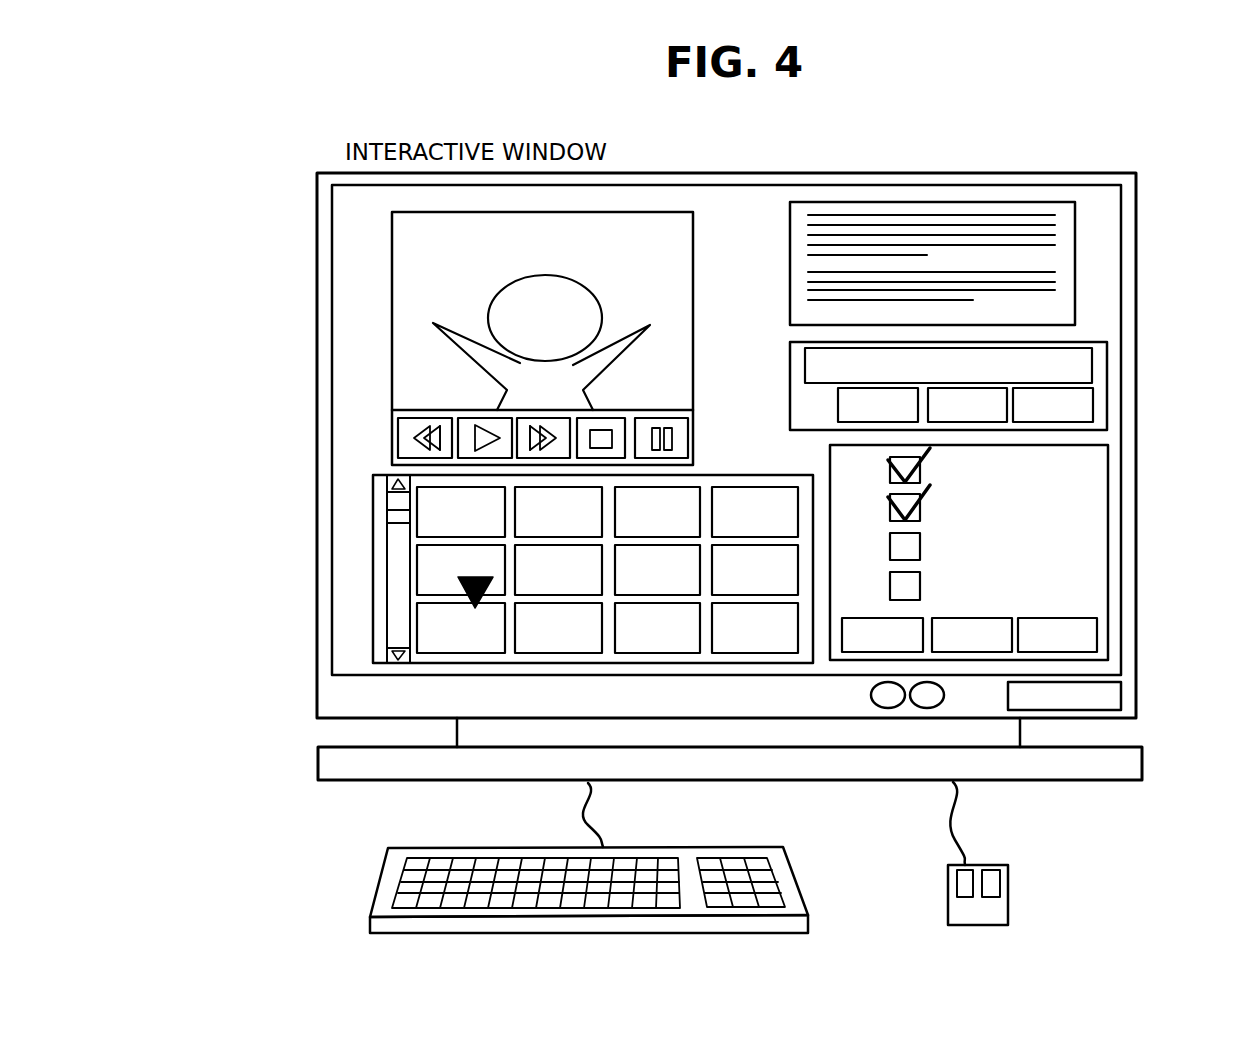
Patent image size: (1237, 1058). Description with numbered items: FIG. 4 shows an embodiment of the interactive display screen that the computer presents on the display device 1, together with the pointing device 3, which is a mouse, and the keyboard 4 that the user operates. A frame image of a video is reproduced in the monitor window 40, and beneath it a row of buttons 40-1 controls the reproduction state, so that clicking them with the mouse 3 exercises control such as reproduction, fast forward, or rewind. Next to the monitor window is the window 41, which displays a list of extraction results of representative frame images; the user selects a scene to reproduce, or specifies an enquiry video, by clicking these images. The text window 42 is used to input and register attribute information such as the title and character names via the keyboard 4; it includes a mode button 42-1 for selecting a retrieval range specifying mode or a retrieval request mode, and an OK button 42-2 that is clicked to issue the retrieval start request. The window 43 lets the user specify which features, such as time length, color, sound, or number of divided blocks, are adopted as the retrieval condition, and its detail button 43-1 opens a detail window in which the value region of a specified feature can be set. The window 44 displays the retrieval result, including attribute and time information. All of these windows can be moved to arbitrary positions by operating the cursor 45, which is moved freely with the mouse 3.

The display device 1 is at (1137, 690).
The pointing device 3 is at (1008, 887).
The keyboard 4 is at (380, 890).
The monitor window 40 is at (392, 323).
The buttons 40-1 is at (392, 437).
The window 41 is at (373, 508).
The text window 42 is at (962, 402).
The mode button 42-1 is at (838, 415).
The OK button 42-2 is at (978, 422).
The window 43 is at (1026, 552).
The detail button 43-1 is at (923, 612).
The window 44 is at (1075, 253).
The cursor 45 is at (460, 593).